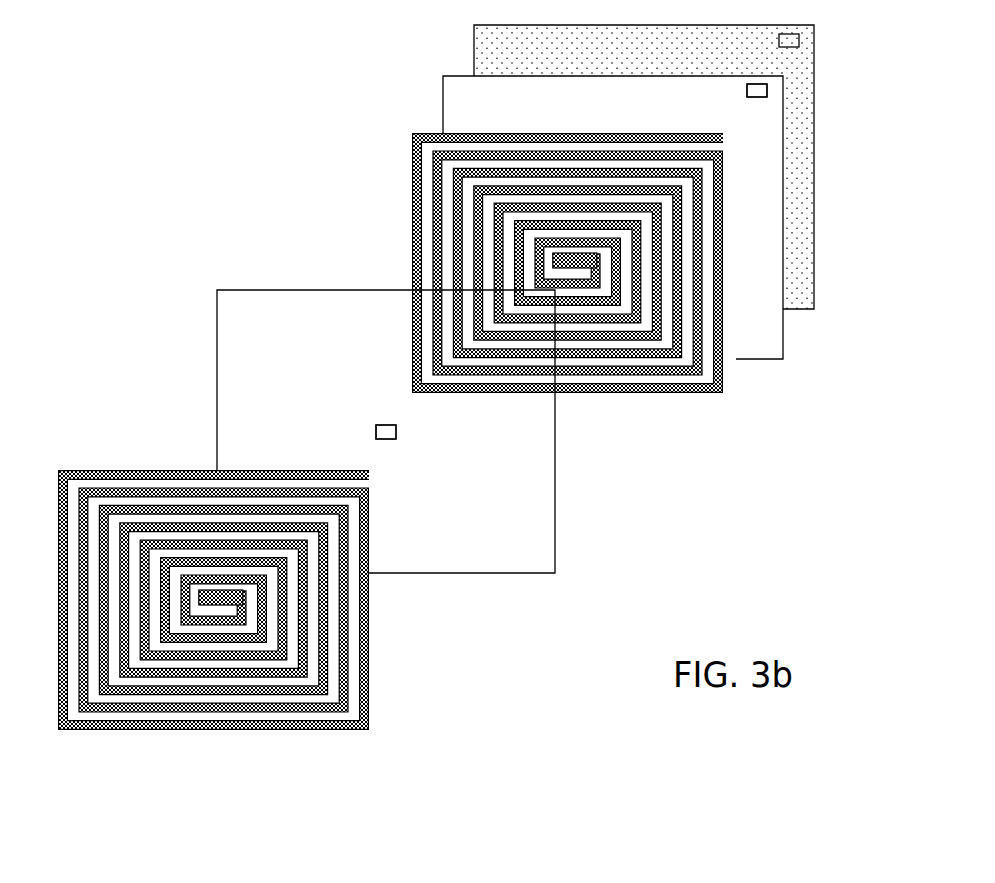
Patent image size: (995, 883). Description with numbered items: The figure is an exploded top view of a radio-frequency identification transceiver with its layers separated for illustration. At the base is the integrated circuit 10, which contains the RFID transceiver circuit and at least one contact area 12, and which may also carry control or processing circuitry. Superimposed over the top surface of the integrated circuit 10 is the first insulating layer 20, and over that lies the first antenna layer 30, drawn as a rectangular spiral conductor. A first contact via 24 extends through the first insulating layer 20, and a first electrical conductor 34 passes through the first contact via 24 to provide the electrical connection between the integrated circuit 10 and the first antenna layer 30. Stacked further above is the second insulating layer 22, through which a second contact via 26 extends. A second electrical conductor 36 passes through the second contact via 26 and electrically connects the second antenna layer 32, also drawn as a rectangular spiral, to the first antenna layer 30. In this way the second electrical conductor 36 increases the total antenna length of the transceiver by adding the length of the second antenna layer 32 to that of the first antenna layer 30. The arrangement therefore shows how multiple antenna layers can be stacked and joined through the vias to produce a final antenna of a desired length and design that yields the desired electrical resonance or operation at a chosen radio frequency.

The integrated circuit 10 is at (492, 48).
The contact area 12 is at (799, 41).
The first insulating layer 20 is at (457, 105).
The second insulating layer 22 is at (227, 331).
The first contact via 24 is at (767, 86).
The second contact via 26 is at (396, 432).
The first antenna layer 30 is at (407, 162).
The second antenna layer 32 is at (83, 470).
The first electrical conductor 34 is at (757, 97).
The second electrical conductor 36 is at (386, 439).